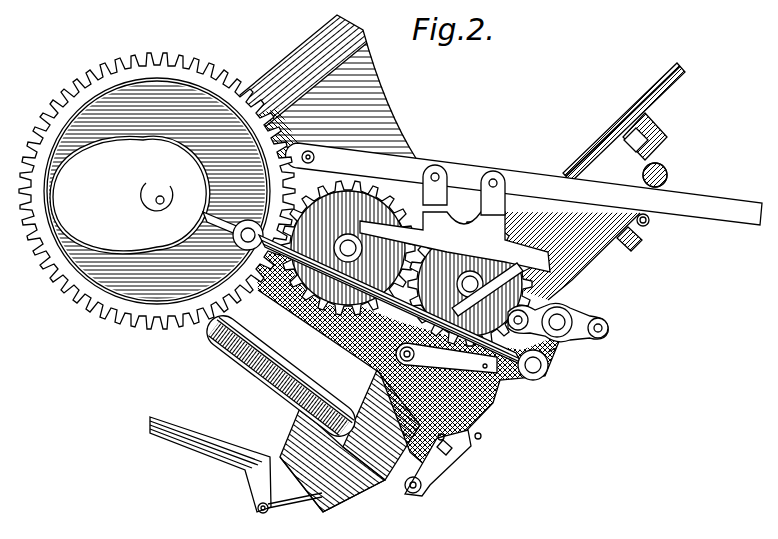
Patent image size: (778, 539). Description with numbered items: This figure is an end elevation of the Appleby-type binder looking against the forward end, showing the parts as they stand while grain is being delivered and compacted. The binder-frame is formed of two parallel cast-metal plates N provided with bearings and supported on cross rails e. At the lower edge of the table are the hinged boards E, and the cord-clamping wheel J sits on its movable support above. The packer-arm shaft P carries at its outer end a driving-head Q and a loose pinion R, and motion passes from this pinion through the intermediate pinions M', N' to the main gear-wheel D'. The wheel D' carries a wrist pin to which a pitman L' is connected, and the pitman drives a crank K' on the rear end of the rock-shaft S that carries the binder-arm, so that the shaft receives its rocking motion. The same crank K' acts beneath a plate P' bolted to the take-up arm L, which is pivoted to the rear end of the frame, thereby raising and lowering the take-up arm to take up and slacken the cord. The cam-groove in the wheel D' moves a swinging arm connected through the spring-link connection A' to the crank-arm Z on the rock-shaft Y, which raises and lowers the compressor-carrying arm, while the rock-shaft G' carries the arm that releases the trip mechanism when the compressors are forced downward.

The main gear-wheel D' is at (157, 191).
The take-up arm L is at (524, 184).
The pitman L' is at (375, 296).
The intermediate pinion M' is at (348, 248).
The intermediate pinion N' is at (470, 284).
The plate P' is at (455, 241).
The cross rails e is at (667, 176).
The cord-clamping wheel J is at (496, 289).
The packer-arm shaft P is at (559, 317).
The driving-head Q is at (606, 328).
The rock-shaft S is at (414, 355).
The crank K' is at (446, 358).
The loose pinion R is at (563, 357).
The rock-shaft G' is at (408, 358).
The binder-frame plates N is at (410, 378).
The crank-arm Z is at (438, 463).
The rock-shaft Y is at (448, 450).
The spring-link connection A' is at (281, 375).
The hinged boards E is at (212, 412).